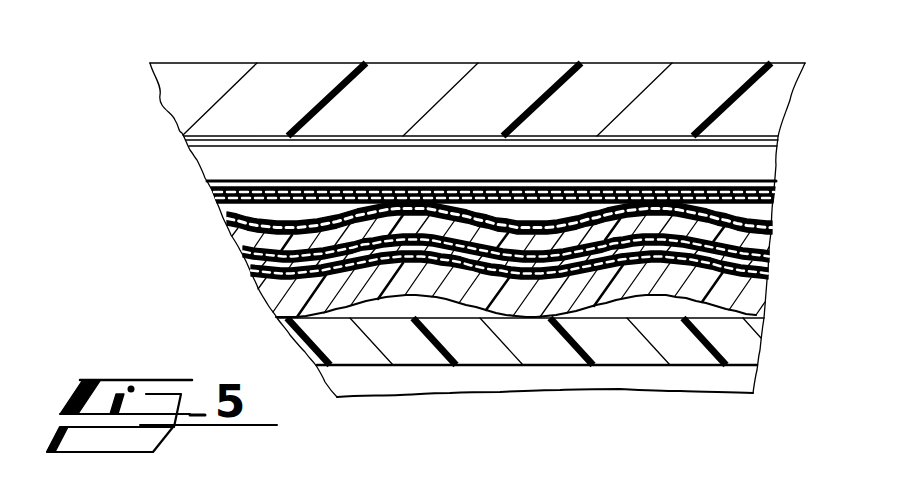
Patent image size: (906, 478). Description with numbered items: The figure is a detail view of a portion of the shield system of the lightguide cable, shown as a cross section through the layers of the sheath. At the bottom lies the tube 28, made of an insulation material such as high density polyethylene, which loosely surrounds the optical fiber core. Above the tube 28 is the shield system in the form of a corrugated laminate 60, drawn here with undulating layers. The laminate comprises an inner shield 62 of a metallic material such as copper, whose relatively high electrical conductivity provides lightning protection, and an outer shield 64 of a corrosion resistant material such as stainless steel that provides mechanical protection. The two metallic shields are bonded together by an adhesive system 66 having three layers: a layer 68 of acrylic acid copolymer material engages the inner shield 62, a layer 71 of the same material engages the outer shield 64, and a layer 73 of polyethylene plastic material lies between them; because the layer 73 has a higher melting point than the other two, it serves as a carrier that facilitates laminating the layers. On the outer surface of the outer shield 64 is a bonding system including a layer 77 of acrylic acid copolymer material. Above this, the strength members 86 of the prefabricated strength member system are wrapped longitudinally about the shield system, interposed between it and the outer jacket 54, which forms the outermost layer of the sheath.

The outer jacket 54 is at (612, 68).
The strength members 86 is at (267, 152).
The layer of acrylic acid copolymer material 71 is at (390, 215).
The layer of polyethylene plastic material 73 is at (423, 240).
The bonding system layer 77 is at (518, 227).
The outer shield 64 is at (655, 227).
The adhesive system 66 is at (472, 147).
The corrugated laminate 60 is at (439, 223).
The layer of acrylic acid copolymer material 68 is at (427, 268).
The inner shield 62 is at (666, 283).
The tube 28 is at (533, 352).